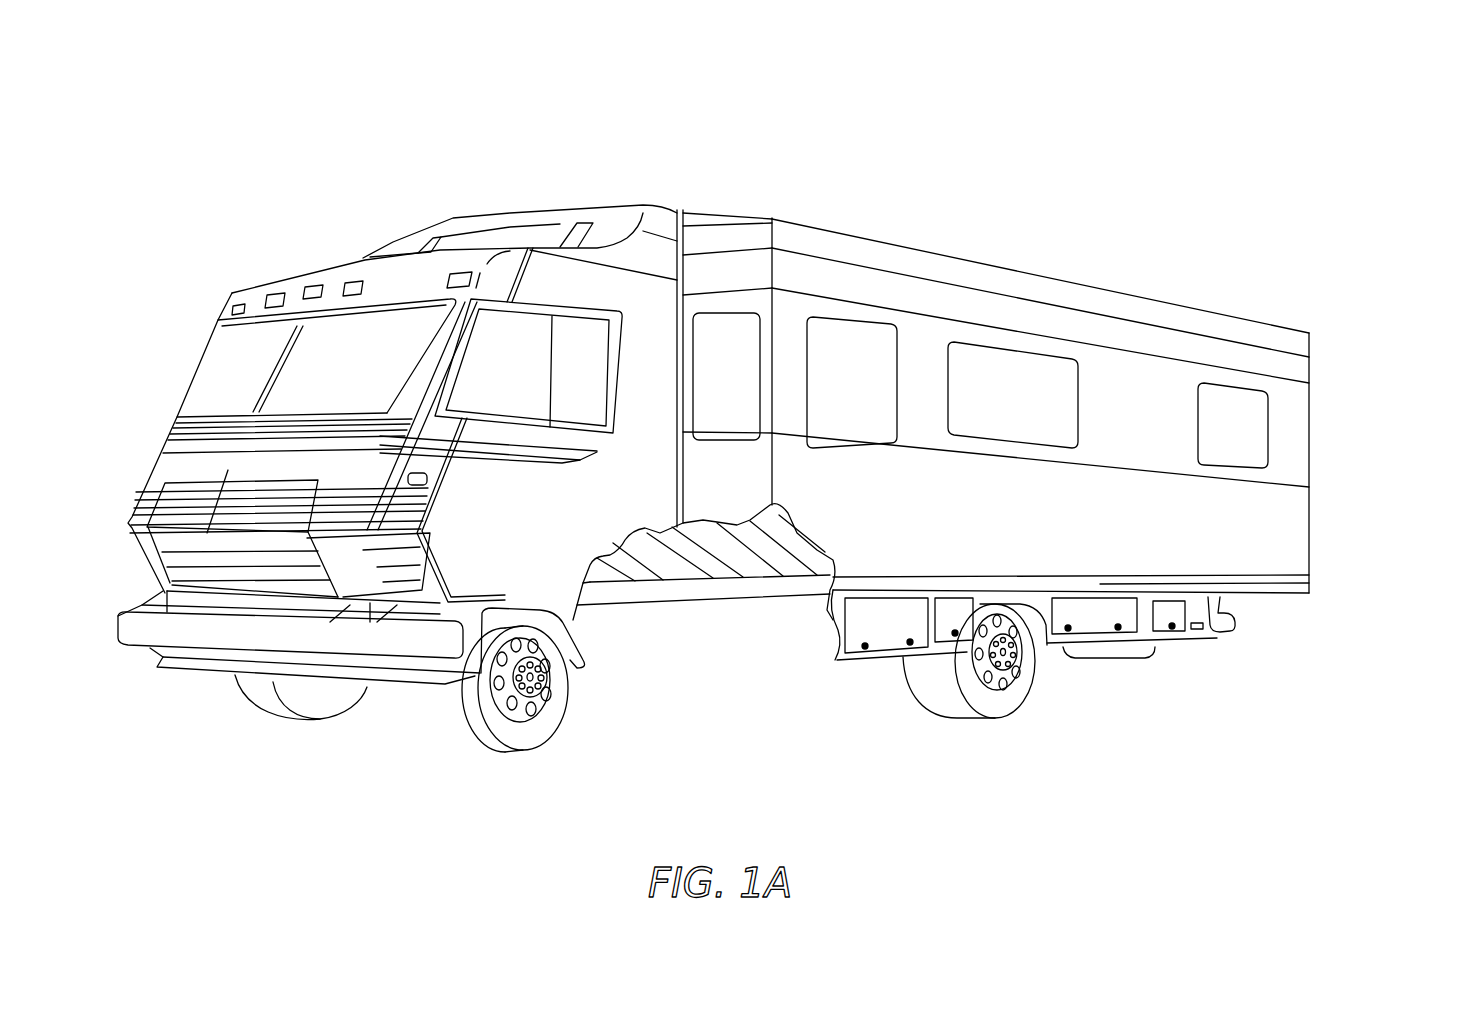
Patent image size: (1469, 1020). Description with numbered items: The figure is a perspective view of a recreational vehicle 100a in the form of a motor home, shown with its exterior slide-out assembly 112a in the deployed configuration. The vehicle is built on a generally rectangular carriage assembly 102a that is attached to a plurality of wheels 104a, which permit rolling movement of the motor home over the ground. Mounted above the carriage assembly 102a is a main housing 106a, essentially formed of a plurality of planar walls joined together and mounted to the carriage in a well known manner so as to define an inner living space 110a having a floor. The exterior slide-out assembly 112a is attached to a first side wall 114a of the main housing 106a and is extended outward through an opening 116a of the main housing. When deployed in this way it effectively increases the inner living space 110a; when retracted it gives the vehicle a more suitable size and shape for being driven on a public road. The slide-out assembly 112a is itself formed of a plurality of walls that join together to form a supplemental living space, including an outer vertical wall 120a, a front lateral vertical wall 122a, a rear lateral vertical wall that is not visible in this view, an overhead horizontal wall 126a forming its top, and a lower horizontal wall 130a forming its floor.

The recreational vehicle 100a is at (1108, 136).
The carriage assembly 102a is at (692, 590).
The wheels 104a is at (302, 720).
The main housing 106a is at (588, 207).
The inner living space 110a is at (808, 523).
The exterior slide-out assembly 112a is at (994, 289).
The first side wall 114a is at (663, 213).
The opening 116a is at (697, 479).
The outer vertical wall 120a is at (1260, 542).
The front lateral vertical wall 122a is at (704, 300).
The overhead horizontal wall 126a is at (1172, 302).
The lower horizontal wall 130a is at (1266, 597).